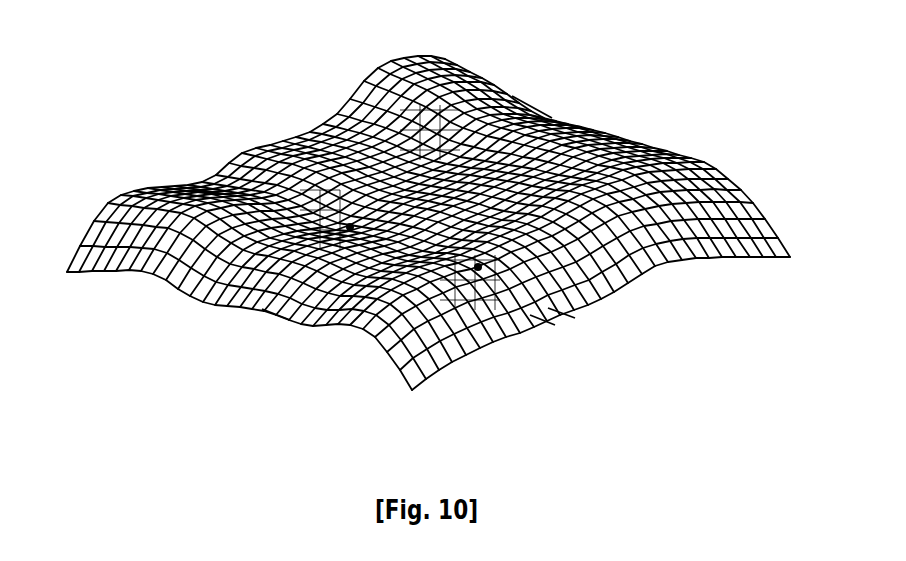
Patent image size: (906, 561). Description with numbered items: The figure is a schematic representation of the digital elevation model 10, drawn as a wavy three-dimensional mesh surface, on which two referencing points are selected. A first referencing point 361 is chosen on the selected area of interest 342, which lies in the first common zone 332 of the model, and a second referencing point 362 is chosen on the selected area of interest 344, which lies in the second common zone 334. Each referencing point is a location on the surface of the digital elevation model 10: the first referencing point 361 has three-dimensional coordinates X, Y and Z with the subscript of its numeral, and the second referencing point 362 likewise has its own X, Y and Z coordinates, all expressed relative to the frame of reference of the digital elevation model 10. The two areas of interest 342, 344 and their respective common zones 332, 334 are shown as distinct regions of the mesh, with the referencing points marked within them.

The digital elevation model 10 is at (86, 292).
The first common zone 332 is at (533, 105).
The second common zone 334 is at (543, 322).
The selected area of interest 342 is at (275, 310).
The selected area of interest 344 is at (560, 313).
The first referencing point 361 is at (327, 180).
The second referencing point 362 is at (395, 357).